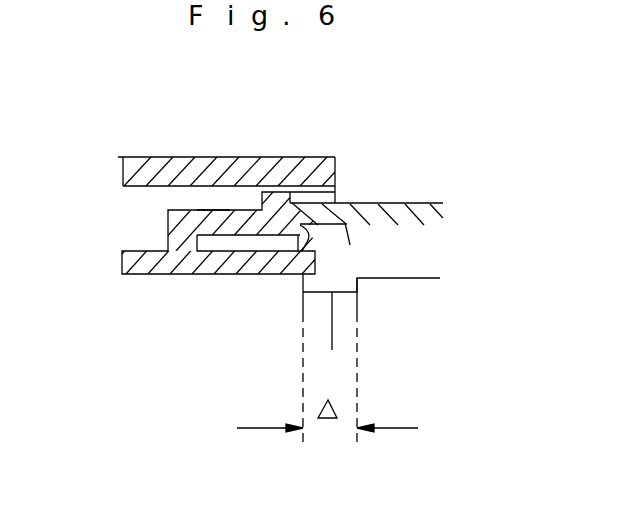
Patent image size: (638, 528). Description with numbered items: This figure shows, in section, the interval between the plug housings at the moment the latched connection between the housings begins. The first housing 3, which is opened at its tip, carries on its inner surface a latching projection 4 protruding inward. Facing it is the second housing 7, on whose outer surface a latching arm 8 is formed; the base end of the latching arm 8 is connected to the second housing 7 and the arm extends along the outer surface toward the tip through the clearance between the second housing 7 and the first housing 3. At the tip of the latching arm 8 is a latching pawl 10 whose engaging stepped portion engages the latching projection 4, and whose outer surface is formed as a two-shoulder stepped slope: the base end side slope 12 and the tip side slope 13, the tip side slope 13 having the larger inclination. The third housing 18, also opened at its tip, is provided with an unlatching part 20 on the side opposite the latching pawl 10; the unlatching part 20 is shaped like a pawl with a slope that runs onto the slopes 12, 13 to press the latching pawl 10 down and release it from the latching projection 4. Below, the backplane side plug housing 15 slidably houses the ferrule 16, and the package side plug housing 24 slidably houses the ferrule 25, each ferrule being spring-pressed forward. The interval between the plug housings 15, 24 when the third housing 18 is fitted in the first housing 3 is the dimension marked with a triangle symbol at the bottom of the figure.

The first housing 3 is at (128, 157).
The latching projection 4 is at (233, 207).
The second housing 7 is at (143, 251).
The latching arm 8 is at (212, 209).
The latching pawl 10 is at (237, 274).
The slope 12 is at (279, 206).
The slope 13 is at (281, 237).
The plug housing 15 is at (303, 313).
The ferrule 16 is at (302, 353).
The third housing 18 is at (428, 203).
The unlatching part 20 is at (338, 186).
The package side plug housing 24 is at (357, 312).
The ferrule 25 is at (347, 323).